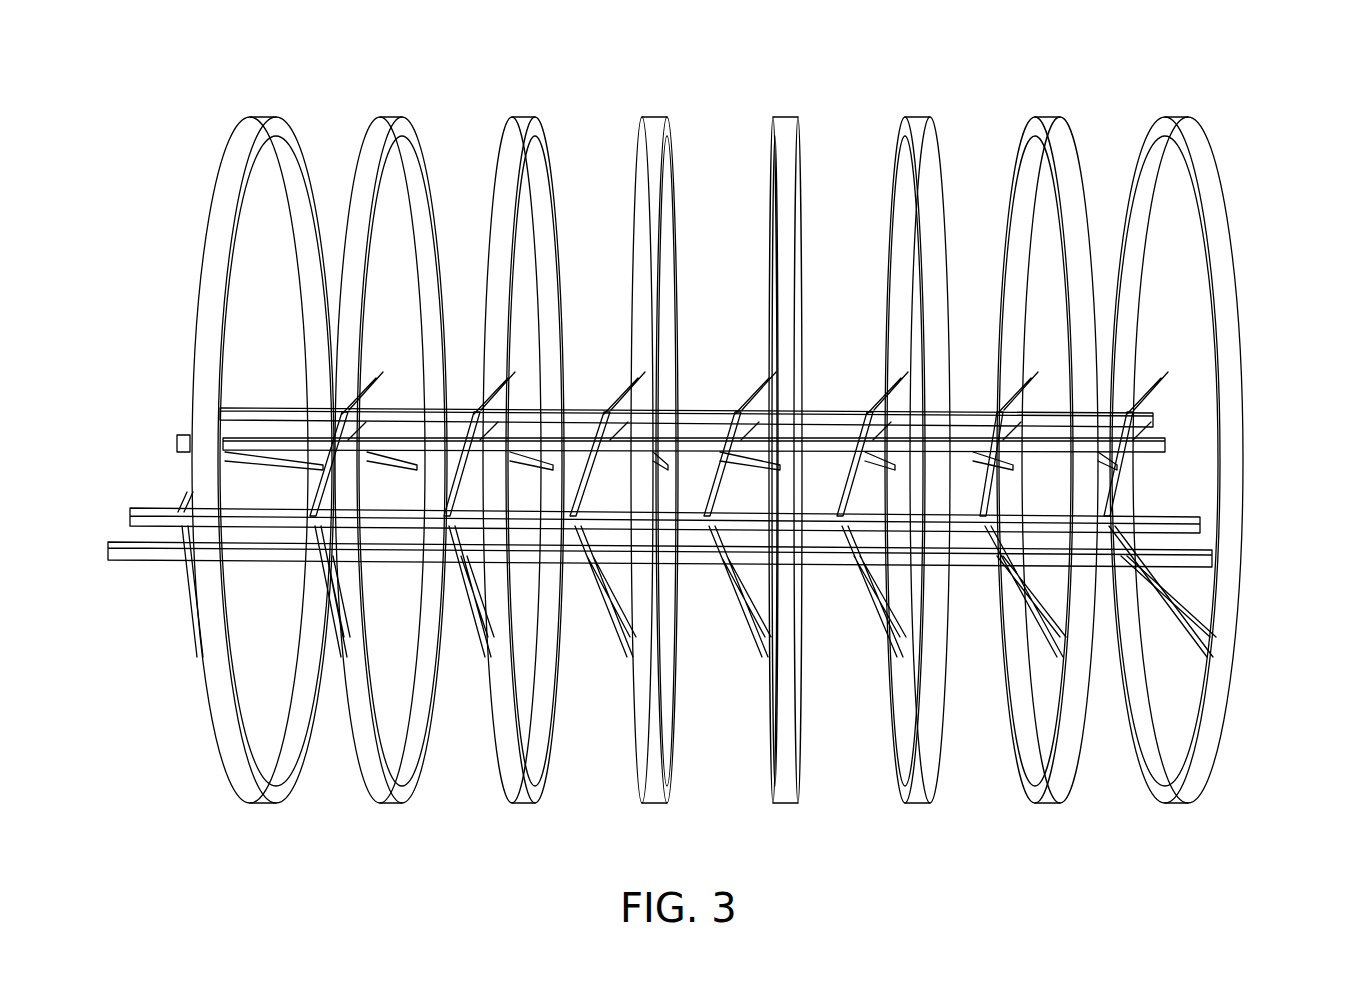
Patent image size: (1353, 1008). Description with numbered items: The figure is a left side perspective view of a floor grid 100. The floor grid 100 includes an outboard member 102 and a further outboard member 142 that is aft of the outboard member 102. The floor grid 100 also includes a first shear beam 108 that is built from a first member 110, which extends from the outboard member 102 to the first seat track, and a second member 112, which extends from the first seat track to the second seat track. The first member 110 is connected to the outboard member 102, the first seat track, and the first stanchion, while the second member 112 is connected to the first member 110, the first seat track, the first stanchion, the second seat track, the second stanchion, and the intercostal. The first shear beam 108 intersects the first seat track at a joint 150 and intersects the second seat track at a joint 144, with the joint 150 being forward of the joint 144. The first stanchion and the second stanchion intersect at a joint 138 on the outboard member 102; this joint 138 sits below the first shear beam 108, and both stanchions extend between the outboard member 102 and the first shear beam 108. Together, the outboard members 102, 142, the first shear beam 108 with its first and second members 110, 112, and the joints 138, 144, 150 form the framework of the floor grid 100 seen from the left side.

The floor grid 100 is at (840, 64).
The outboard member 102 is at (1210, 150).
The first shear beam 108 is at (1210, 572).
The first member 110 is at (1173, 582).
The second member 112 is at (1148, 538).
The joint 138 is at (1213, 672).
The outboard member 142 is at (1058, 130).
The joint 144 is at (1118, 518).
The joint 150 is at (1142, 560).